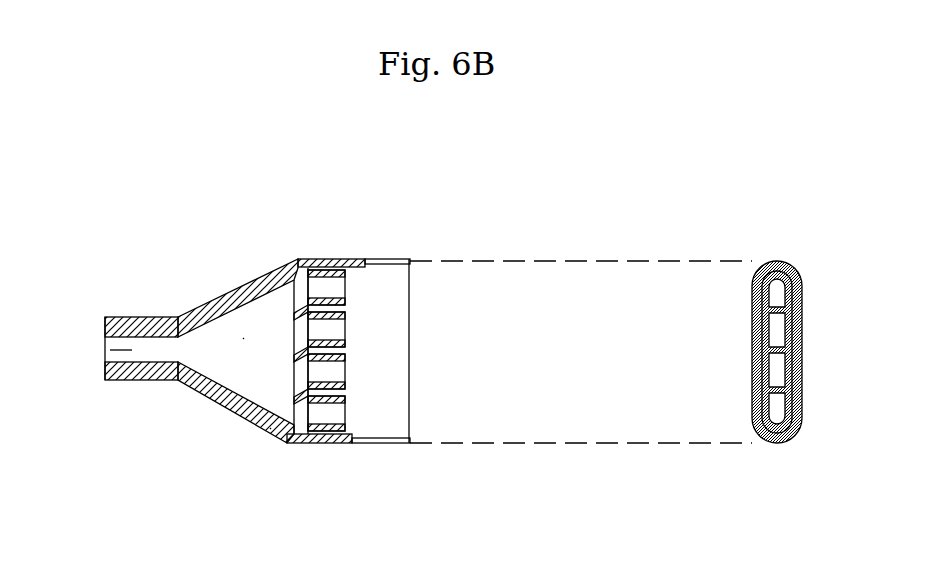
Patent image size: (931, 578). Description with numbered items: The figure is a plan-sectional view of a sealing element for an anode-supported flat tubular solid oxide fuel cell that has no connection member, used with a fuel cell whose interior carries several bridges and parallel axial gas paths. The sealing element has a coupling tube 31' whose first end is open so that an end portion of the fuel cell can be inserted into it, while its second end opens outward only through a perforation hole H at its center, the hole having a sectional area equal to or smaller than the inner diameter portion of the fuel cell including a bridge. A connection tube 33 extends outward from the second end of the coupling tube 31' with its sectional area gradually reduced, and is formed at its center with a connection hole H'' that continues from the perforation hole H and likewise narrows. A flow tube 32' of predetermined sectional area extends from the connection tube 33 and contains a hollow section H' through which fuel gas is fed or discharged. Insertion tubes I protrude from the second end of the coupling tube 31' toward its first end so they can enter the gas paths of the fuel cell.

The flow tube 32' is at (133, 311).
The connection tube 33 is at (192, 387).
The coupling tube 31' is at (544, 386).
The insertion tube I is at (330, 287).
The perforation hole H is at (241, 460).
The hollow section H' is at (87, 359).
The connection hole H'' is at (218, 288).